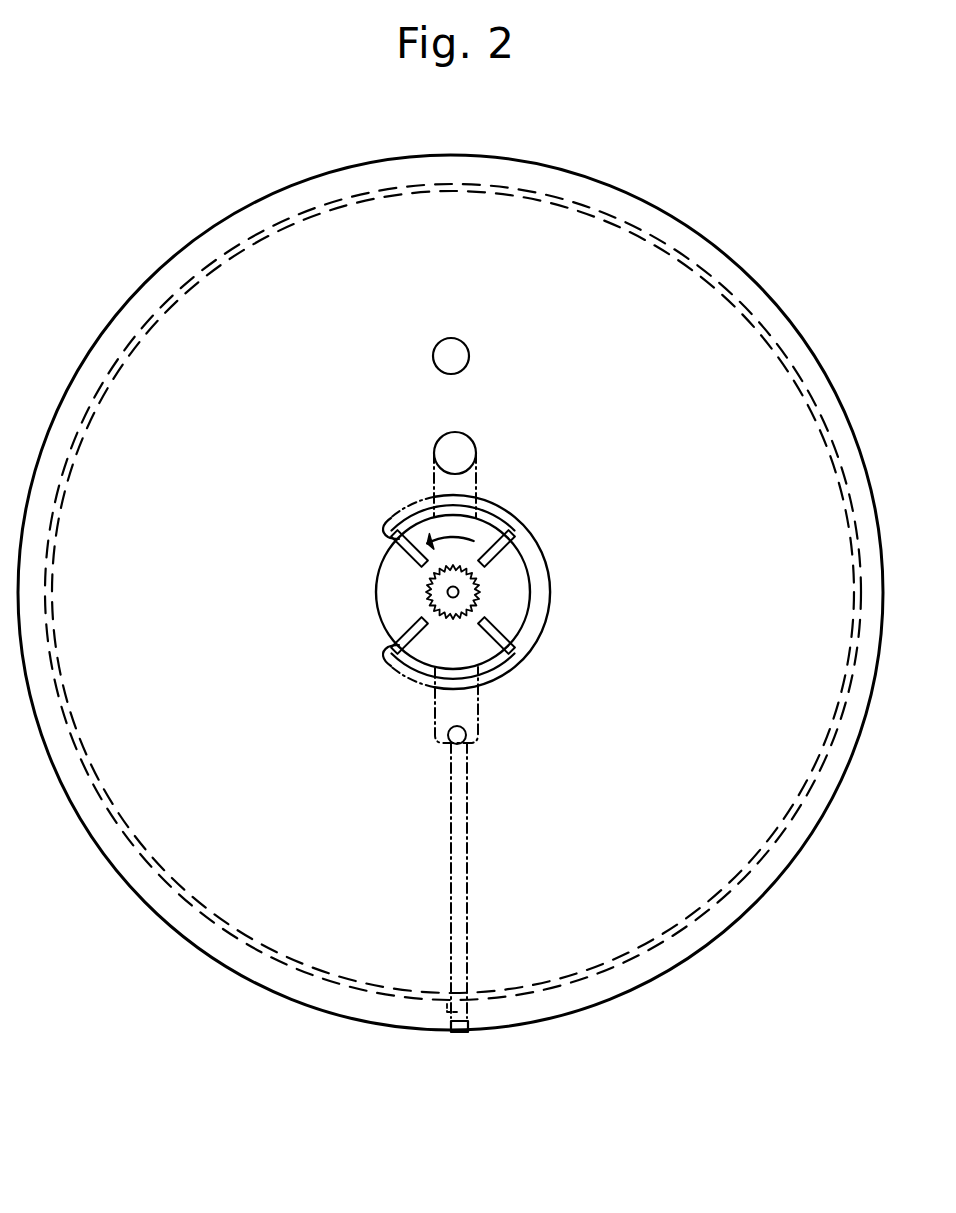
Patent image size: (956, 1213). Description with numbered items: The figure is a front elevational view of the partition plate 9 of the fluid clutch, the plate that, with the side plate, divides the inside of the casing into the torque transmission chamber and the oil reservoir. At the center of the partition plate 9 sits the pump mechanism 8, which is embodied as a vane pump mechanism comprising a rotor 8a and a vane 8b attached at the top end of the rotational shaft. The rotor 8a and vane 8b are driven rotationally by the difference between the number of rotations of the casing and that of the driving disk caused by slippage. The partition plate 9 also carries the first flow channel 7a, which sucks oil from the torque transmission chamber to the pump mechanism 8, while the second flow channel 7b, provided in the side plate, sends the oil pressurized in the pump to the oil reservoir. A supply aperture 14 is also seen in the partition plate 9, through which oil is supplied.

The partition plate 9 is at (642, 198).
The supply aperture 14 is at (470, 356).
The first flow channel 7a is at (463, 890).
The second flow channel 7b is at (478, 449).
The pump mechanism 8 is at (538, 587).
The rotor 8a is at (500, 567).
The vane 8b is at (518, 645).